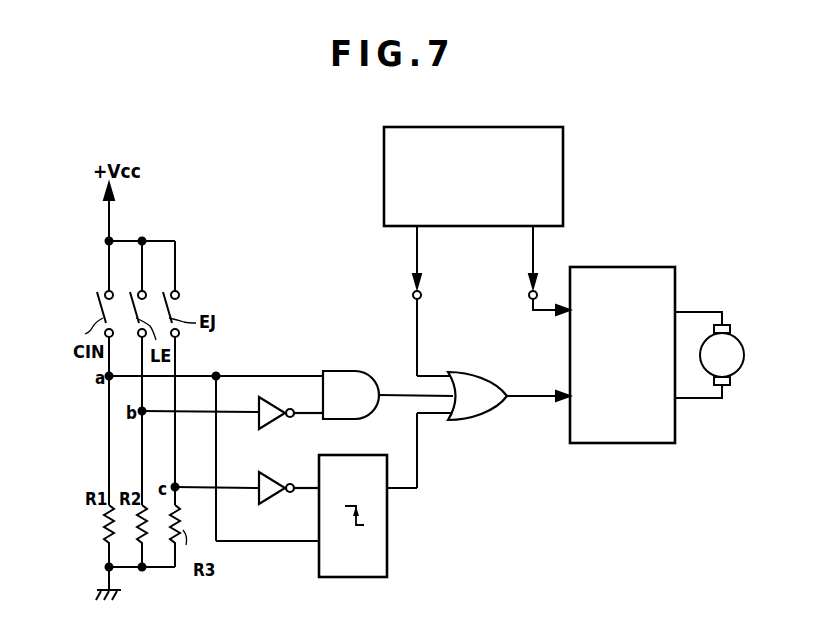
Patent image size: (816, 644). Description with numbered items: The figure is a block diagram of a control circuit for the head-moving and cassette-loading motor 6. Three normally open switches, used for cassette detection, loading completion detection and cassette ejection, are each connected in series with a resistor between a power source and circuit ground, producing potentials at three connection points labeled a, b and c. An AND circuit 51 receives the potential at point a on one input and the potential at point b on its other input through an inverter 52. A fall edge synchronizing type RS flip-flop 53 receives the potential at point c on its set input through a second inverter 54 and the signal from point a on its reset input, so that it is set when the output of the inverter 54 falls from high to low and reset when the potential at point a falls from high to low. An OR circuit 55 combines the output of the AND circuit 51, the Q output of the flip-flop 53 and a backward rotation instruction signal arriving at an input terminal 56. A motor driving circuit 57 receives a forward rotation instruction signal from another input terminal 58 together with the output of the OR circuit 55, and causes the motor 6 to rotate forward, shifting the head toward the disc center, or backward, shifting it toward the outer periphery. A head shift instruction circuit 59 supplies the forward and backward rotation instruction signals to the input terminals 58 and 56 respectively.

The AND circuit 51 is at (362, 371).
The inverter 52 is at (283, 421).
The fall edge synchronizing type RS flip-flop 53 is at (388, 548).
The inverter 54 is at (283, 496).
The OR circuit 55 is at (478, 420).
The input terminal 56 is at (413, 294).
The motor driving circuit 57 is at (628, 443).
The input terminal 58 is at (529, 294).
The head shift instruction circuit 59 is at (563, 160).
The head-moving and cassette-loading motor 6 is at (733, 330).